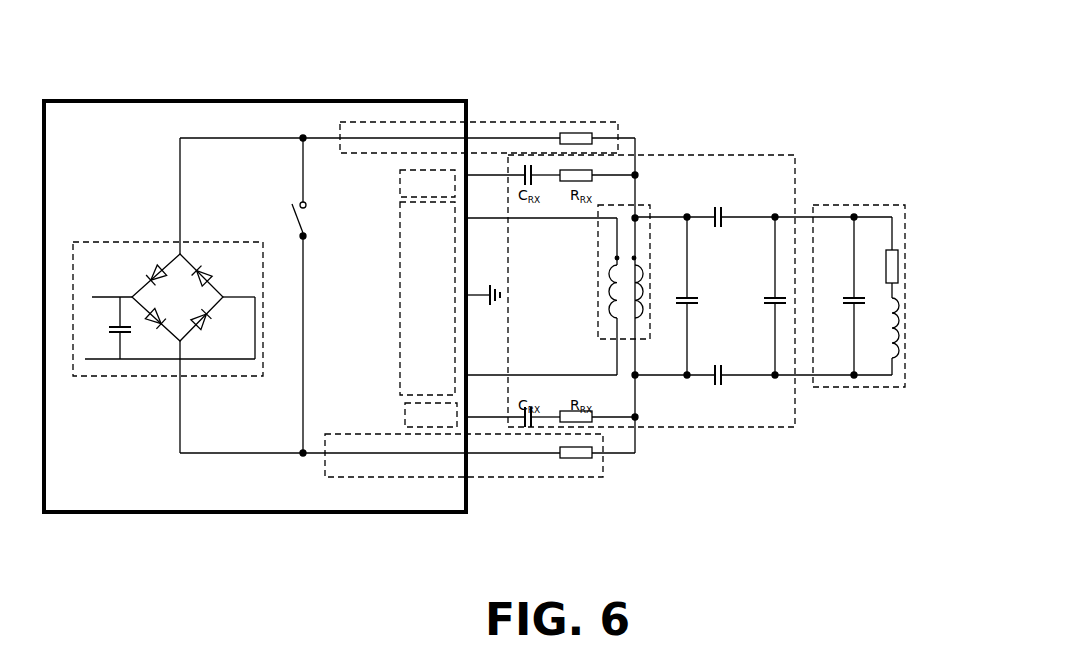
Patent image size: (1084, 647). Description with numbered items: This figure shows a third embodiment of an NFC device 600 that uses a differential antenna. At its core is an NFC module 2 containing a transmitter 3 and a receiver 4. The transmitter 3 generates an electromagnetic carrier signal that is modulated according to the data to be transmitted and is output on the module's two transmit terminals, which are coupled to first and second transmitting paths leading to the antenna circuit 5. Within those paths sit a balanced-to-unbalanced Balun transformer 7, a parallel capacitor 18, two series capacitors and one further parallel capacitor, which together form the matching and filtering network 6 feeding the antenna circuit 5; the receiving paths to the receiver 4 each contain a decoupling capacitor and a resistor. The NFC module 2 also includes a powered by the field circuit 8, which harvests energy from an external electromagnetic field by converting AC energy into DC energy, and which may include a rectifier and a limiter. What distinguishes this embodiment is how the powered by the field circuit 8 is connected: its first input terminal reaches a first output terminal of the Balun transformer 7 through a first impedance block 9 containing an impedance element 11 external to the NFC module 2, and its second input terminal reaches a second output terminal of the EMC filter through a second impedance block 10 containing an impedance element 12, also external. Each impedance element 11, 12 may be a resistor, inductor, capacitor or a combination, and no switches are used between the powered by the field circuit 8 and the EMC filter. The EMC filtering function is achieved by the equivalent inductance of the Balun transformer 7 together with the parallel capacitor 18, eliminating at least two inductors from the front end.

The wireless power transmission system 600 is at (633, 95).
The NFC module 2 is at (200, 100).
The powered by the field circuit 8 is at (130, 241).
The transmitter 3 is at (400, 305).
The receiver 4 is at (400, 196).
The first impedance block 9 is at (469, 104).
The impedance element 11 is at (577, 132).
The second impedance block 10 is at (469, 487).
The impedance element 12 is at (583, 462).
The matching network 6 is at (660, 261).
The Balun transformer 7 is at (651, 205).
The parallel capacitor C_EMC 18 is at (694, 296).
The antenna circuit 5 is at (906, 205).